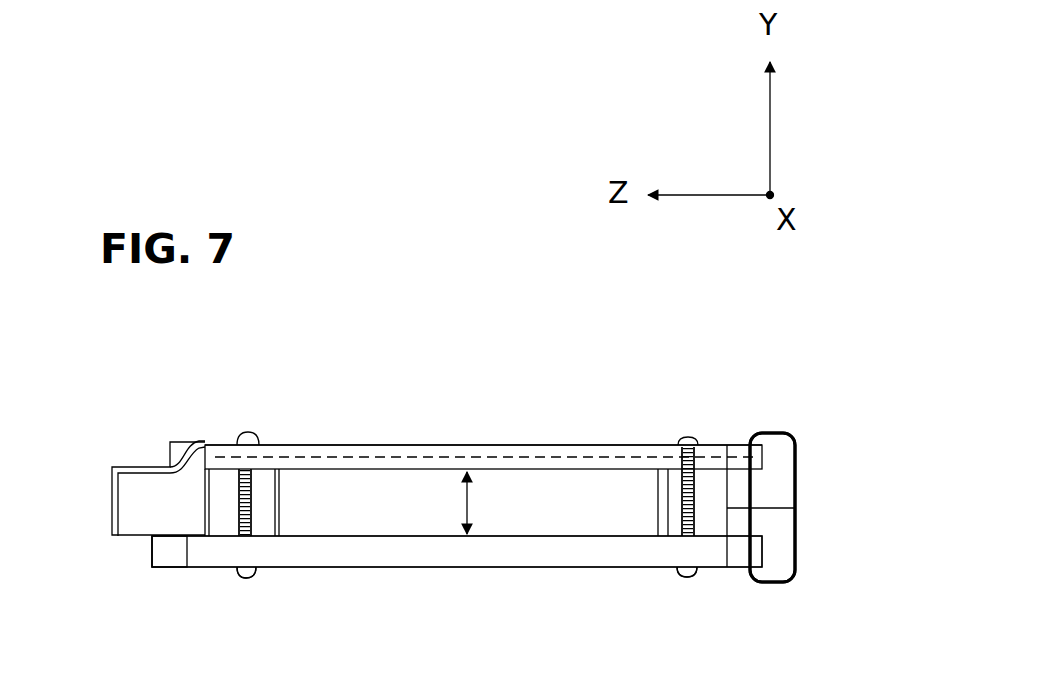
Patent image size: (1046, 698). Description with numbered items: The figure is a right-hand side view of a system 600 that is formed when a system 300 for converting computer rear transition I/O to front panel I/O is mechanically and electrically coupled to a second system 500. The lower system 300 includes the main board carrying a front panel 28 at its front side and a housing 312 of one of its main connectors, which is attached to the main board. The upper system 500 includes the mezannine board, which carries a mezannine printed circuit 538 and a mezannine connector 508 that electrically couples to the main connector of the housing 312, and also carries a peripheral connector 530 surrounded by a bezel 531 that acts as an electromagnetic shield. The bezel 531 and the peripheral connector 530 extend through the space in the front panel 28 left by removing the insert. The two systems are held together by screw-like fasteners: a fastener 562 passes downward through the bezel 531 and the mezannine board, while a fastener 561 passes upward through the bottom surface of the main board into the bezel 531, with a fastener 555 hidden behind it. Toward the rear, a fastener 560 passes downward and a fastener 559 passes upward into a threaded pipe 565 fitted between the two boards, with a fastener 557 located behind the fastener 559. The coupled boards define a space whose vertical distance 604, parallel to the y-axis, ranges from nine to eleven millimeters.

The system 600 is at (391, 262).
The mezannine printed circuit 538 is at (498, 456).
The housing 312 is at (780, 545).
The front panel 28 is at (175, 551).
The system 300 is at (791, 592).
The mezannine connector 508 is at (787, 483).
The system 500 is at (790, 424).
The peripheral connector 530 is at (147, 495).
The bezel 531 is at (122, 466).
The fastener 562 is at (243, 432).
The fastener 561 is at (243, 571).
The fastener 555 is at (260, 578).
The vertical distance 604 is at (464, 502).
The pipe 565 is at (658, 497).
The fastener 560 is at (688, 438).
The fastener 559 is at (685, 569).
The fastener 557 is at (703, 585).